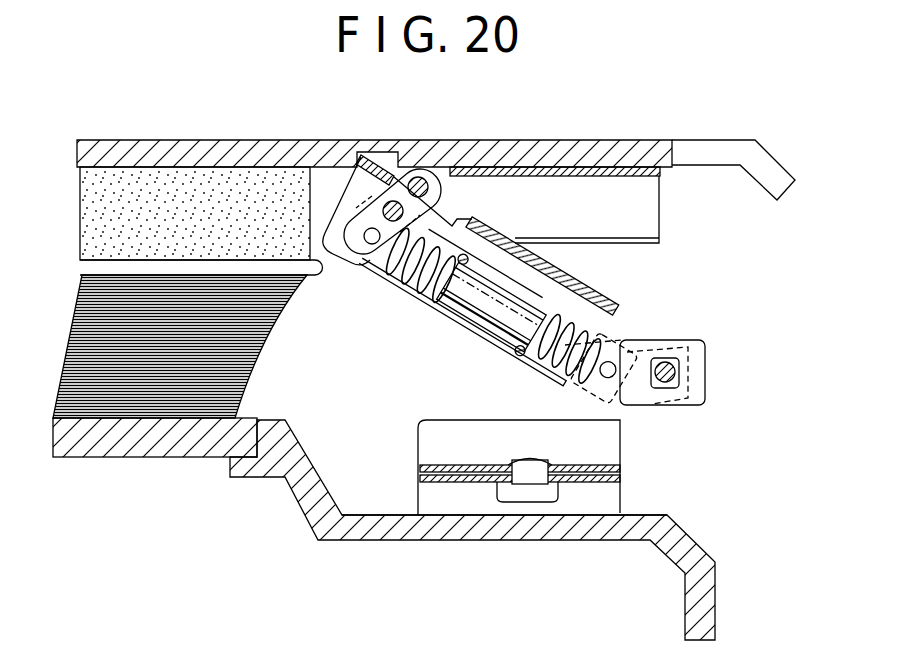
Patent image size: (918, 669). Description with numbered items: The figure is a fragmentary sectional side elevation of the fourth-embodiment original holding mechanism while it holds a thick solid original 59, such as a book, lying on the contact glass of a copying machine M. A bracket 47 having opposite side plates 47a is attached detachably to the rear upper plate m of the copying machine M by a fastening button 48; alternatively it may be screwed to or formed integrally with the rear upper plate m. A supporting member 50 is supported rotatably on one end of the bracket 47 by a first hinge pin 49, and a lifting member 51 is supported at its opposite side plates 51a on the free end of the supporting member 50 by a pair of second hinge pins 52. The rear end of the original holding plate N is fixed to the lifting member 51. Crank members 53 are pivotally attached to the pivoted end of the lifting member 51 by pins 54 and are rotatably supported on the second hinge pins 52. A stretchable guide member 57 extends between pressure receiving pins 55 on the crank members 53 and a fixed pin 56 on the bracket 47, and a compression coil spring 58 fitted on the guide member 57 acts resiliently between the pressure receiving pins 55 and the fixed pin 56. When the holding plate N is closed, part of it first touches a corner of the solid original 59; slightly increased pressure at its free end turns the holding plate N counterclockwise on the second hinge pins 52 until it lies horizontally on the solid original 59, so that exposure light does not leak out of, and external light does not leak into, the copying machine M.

The original holding plate N is at (246, 140).
The copying machine M is at (302, 512).
The rear upper plate m is at (470, 538).
The bracket 47 is at (620, 455).
The side plates 47a is at (705, 393).
The fastening button 48 is at (522, 503).
The first hinge pin 49 is at (683, 371).
The supporting member 50 is at (592, 311).
The lifting member 51 is at (640, 212).
The side plates 51a is at (650, 192).
The second hinge pins 52 is at (392, 202).
The crank members 53 is at (409, 170).
The pins 54 is at (425, 176).
The pressure receiving pins 55 is at (369, 241).
The fixed pin 56 is at (603, 379).
The stretchable guide member 57 is at (492, 316).
The compression coil spring 58 is at (418, 286).
The solid original 59 is at (242, 388).